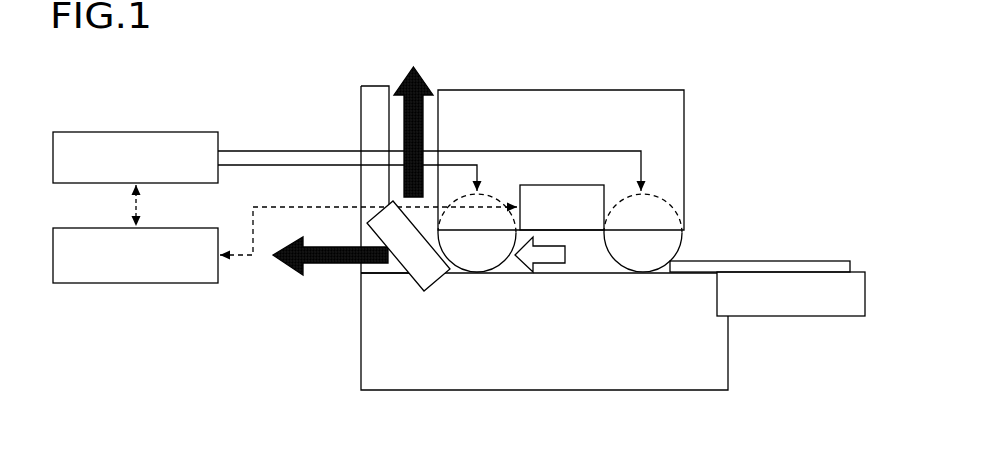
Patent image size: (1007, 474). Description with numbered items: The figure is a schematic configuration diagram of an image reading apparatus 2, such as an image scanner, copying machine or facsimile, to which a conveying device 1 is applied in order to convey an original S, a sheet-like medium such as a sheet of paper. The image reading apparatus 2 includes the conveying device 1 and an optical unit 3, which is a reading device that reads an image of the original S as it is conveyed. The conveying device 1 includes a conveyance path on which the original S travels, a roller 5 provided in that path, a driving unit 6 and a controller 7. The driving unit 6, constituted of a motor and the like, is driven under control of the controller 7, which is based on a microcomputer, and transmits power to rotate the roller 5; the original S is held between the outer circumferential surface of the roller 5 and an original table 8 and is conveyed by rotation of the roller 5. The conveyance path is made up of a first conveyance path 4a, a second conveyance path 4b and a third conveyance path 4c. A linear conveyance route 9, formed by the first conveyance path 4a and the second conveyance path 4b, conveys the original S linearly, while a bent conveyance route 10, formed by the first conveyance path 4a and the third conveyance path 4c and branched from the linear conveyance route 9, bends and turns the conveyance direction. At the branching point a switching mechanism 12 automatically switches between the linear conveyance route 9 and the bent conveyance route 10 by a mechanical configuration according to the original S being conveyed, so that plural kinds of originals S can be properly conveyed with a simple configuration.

The conveying device 1 is at (293, 150).
The image reading apparatus 2 is at (660, 55).
The optical unit 3 is at (583, 215).
The first conveyance path 4a is at (597, 245).
The second conveyance path 4b is at (353, 265).
The third conveyance path 4c is at (433, 113).
The roller 5 is at (481, 255).
The driving unit 6 is at (170, 132).
The controller 7 is at (170, 228).
The original table 8 is at (562, 273).
The linear conveyance route 9 is at (398, 277).
The bent conveyance route 10 is at (442, 141).
The switching mechanism 12 is at (431, 296).
The original S is at (786, 261).